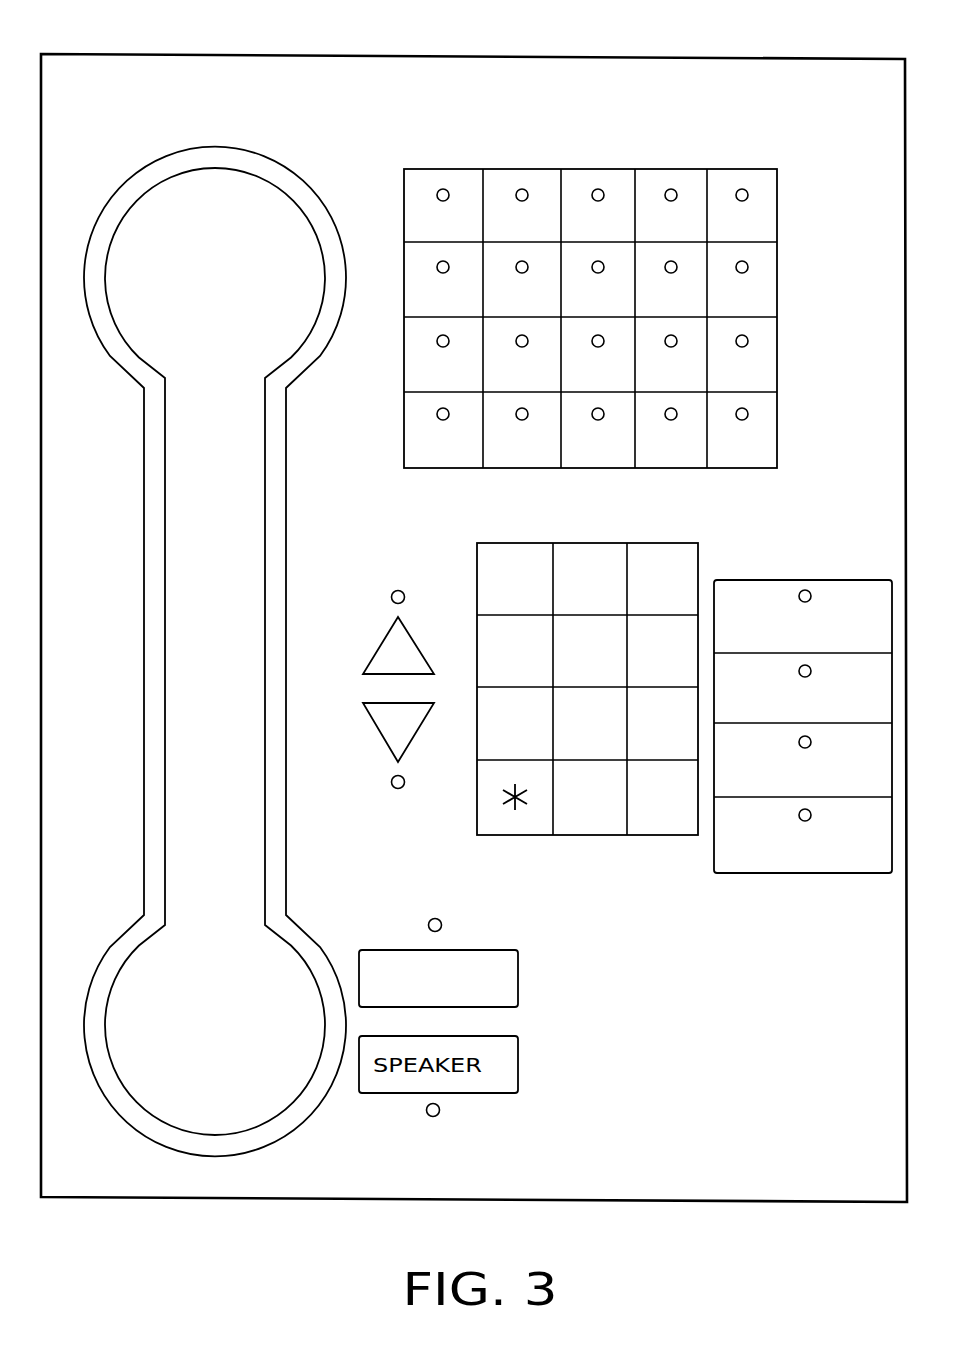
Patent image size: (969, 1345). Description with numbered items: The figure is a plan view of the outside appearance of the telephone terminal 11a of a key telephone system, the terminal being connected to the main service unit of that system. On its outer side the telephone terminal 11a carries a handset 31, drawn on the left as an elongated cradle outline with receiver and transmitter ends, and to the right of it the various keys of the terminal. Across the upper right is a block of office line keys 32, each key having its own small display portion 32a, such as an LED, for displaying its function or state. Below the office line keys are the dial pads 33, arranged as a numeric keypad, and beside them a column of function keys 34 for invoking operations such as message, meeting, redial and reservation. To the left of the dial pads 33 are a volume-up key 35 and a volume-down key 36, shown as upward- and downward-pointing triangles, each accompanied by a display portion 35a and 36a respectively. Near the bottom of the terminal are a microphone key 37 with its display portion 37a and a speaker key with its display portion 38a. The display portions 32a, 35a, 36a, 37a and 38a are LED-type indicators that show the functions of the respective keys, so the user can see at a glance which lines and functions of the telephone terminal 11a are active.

The telephone terminal 11a is at (540, 58).
The handset 31 is at (143, 598).
The office line keys 32 is at (678, 168).
The display portion 32a is at (522, 189).
The dial pads 33 is at (699, 566).
The function keys 34 is at (838, 580).
The volume-up key 35 is at (380, 648).
The display portion 35a is at (398, 591).
The volume-down key 36 is at (380, 735).
The display portion 36a is at (398, 789).
The microphone key 37 is at (495, 950).
The display portion 37a is at (438, 919).
The display portion 38a is at (440, 1111).